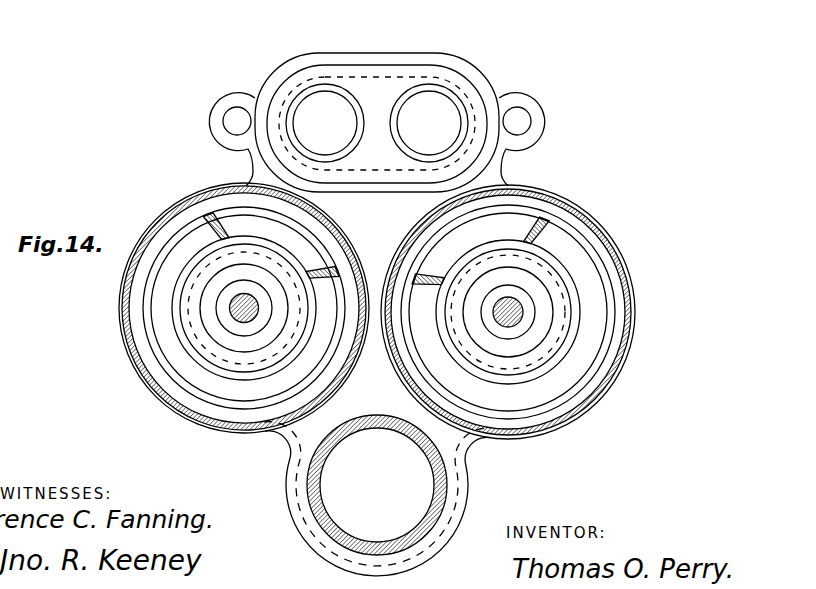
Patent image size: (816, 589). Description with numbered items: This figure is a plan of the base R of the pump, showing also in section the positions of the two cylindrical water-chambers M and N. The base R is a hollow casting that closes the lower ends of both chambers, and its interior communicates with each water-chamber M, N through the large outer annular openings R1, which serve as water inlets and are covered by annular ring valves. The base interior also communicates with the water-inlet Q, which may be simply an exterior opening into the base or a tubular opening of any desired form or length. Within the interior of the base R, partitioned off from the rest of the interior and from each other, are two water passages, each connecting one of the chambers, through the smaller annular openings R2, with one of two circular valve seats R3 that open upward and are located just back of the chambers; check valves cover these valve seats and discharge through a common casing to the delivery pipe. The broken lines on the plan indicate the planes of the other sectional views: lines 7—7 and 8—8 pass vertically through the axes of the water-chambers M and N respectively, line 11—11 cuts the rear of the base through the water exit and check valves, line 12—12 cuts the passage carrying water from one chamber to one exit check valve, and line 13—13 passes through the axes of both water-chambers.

The section line 7— 7 is at (538, 97).
The section line 8— 8 is at (218, 90).
The section line 11— 11 is at (180, 122).
The section line 12— 12 is at (397, 46).
The section line 13— 13 is at (372, 308).
The water-chamber M is at (166, 221).
The water-chamber N is at (594, 222).
The water-inlet Q is at (377, 485).
The base R is at (377, 474).
The outer annular openings R1 is at (377, 298).
The smaller annular openings R2 is at (376, 310).
The circular valve seats R3 is at (377, 123).